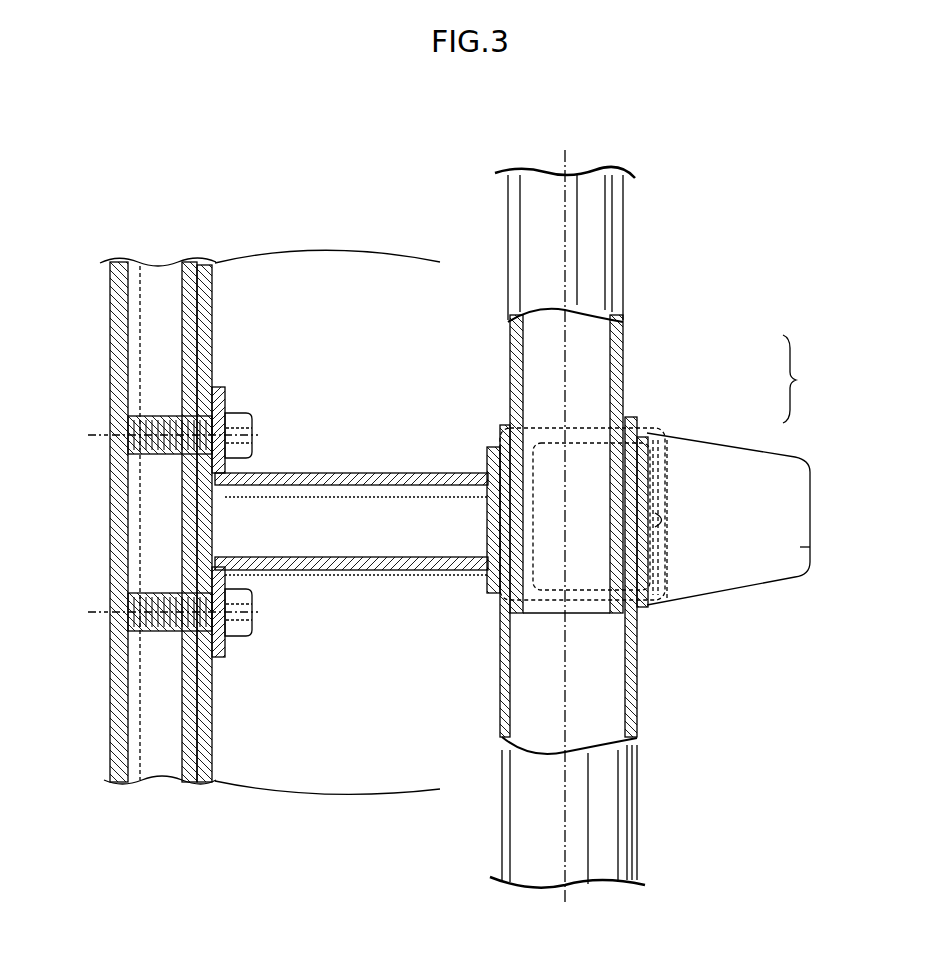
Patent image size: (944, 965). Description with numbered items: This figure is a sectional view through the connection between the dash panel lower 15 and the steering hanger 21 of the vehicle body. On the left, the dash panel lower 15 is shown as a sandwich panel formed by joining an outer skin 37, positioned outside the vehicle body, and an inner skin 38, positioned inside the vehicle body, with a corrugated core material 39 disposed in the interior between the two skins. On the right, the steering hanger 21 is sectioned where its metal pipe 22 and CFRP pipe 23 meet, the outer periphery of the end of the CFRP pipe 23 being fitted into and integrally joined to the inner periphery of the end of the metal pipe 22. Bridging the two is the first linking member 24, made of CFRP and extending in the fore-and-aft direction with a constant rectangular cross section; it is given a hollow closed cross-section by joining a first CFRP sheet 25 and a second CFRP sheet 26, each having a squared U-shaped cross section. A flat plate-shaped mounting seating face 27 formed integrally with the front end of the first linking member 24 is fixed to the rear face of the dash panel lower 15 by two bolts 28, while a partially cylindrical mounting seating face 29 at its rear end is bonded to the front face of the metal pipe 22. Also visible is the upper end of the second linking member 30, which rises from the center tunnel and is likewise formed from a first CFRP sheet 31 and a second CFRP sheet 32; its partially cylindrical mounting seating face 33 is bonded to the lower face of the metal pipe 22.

The dash panel lower 15 is at (95, 406).
The steering hanger 21 is at (804, 379).
The metal pipe 22 is at (640, 655).
The CFRP pipe 23 is at (625, 352).
The first linking member 24 is at (351, 510).
The first CFRP sheet 25 is at (350, 472).
The second CFRP sheet 26 is at (340, 572).
The flat plate-shaped mounting seating face 27 is at (222, 400).
The bolt 28 is at (250, 430).
The partially cylindrical mounting seating face 29 is at (482, 590).
The second linking member 30 is at (755, 585).
The first CFRP sheet 31 is at (810, 547).
The second CFRP sheet 32 is at (590, 432).
The partially cylindrical mounting seating face 33 is at (650, 520).
The outer skin 37 is at (110, 325).
The inner skin 38 is at (216, 330).
The corrugated core material 39 is at (160, 290).